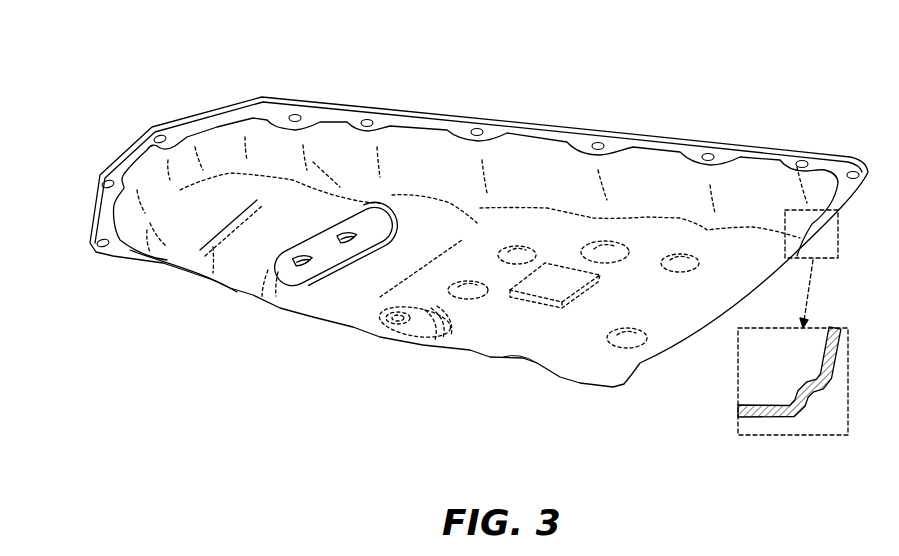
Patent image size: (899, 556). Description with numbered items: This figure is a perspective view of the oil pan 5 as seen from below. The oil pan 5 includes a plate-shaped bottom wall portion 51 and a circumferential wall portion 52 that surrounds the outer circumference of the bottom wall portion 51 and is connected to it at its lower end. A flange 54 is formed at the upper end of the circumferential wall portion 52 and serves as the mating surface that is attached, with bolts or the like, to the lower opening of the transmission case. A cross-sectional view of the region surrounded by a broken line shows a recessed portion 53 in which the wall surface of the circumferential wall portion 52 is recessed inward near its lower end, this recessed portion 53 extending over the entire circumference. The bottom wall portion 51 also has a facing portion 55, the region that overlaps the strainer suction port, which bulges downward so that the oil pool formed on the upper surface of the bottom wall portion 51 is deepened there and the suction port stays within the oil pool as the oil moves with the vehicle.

The oil pan 5 is at (767, 128).
The bottom wall portion 51 is at (212, 273).
The circumferential wall portion 52 is at (115, 218).
The recessed portion 53 is at (820, 397).
The flange 54 is at (205, 112).
The facing portion 55 is at (280, 285).